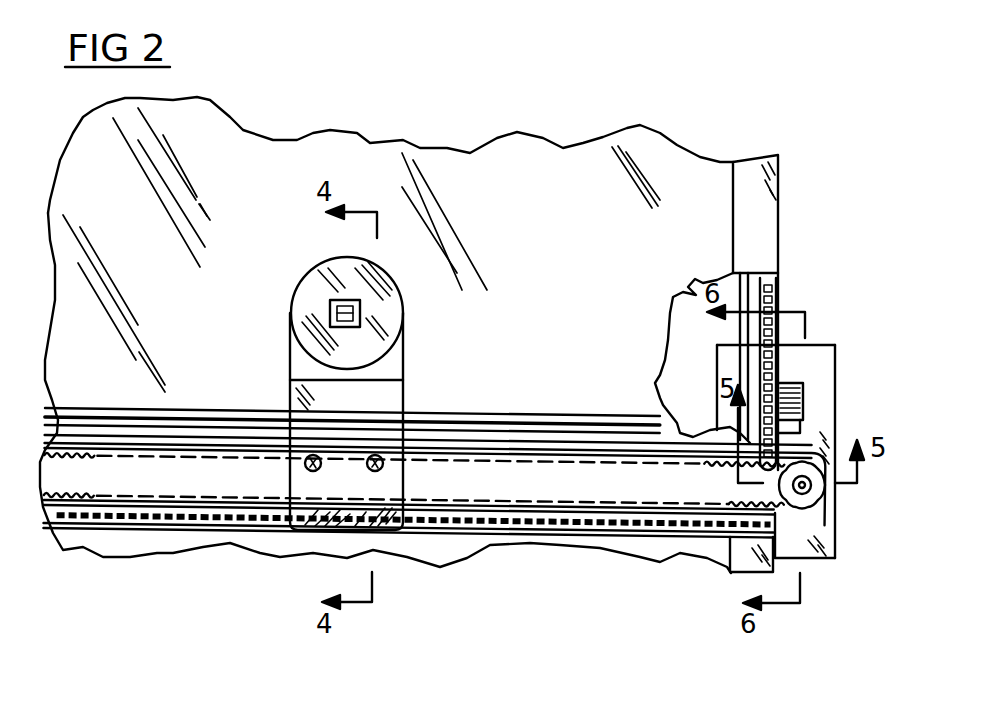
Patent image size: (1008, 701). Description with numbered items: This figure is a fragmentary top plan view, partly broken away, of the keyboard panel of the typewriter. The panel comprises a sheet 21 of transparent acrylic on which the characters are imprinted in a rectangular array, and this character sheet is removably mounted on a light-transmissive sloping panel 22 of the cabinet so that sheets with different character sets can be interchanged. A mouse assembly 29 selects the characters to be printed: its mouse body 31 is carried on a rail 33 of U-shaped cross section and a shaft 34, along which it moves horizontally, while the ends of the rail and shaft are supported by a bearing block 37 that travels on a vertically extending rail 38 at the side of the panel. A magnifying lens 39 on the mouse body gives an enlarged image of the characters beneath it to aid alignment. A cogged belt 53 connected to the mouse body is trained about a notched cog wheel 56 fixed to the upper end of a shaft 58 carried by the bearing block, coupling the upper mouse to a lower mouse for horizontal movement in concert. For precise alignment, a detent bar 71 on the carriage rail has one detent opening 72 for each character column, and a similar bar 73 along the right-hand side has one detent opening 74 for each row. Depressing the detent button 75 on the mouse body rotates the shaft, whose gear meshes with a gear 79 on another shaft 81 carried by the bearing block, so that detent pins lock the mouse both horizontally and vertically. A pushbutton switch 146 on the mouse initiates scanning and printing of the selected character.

The sheet of transparent material 21 is at (558, 183).
The sloping panel 22 is at (758, 223).
The mouse assembly 29 is at (392, 360).
The mouse body 31 is at (316, 386).
The rail 33 is at (253, 480).
The shaft 34 is at (517, 420).
The bearing block 37 is at (803, 360).
The vertically extending rail 38 is at (733, 270).
The magnifying lens 39 is at (333, 300).
The cogged belt 53 is at (110, 492).
The notched pulley or cog wheel 56 is at (808, 510).
The shaft 58 is at (832, 537).
The detent bar 71 is at (167, 523).
The detent opening 72 is at (549, 525).
The detent bar 73 is at (757, 375).
The detent opening 74 is at (775, 293).
The detent button 75 is at (378, 455).
The gear 79 is at (800, 395).
The shaft 81 is at (803, 417).
The pushbutton switch 146 is at (310, 455).